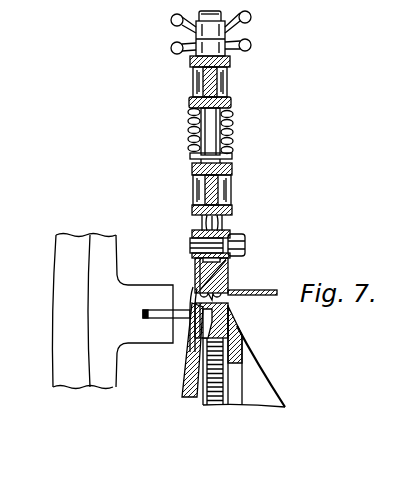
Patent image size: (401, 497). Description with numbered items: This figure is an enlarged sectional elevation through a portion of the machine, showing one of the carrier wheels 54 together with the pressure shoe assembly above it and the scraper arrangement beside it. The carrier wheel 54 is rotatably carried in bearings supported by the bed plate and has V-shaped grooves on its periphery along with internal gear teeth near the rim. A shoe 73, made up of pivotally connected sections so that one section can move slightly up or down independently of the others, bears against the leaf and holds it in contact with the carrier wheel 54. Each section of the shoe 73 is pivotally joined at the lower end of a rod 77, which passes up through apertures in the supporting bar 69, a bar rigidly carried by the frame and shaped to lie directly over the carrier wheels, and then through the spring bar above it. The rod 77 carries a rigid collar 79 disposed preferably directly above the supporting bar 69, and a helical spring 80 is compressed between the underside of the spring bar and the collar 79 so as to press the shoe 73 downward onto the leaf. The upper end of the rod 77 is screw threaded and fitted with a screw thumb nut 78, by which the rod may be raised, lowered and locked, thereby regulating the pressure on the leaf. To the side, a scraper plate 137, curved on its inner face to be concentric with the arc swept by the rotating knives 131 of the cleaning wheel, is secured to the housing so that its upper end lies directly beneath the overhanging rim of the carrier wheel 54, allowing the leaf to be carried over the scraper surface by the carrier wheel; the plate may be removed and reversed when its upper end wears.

The screw thumb nut 78 is at (250, 18).
The rod 77 is at (213, 125).
The helical spring 80 is at (191, 118).
The rigid collar 79 is at (233, 157).
The supporting bar 69 is at (204, 190).
The shoe 73 is at (226, 282).
The carrier wheel 54 is at (232, 321).
The scraper plate 137 is at (189, 365).
The knife 131 is at (190, 308).